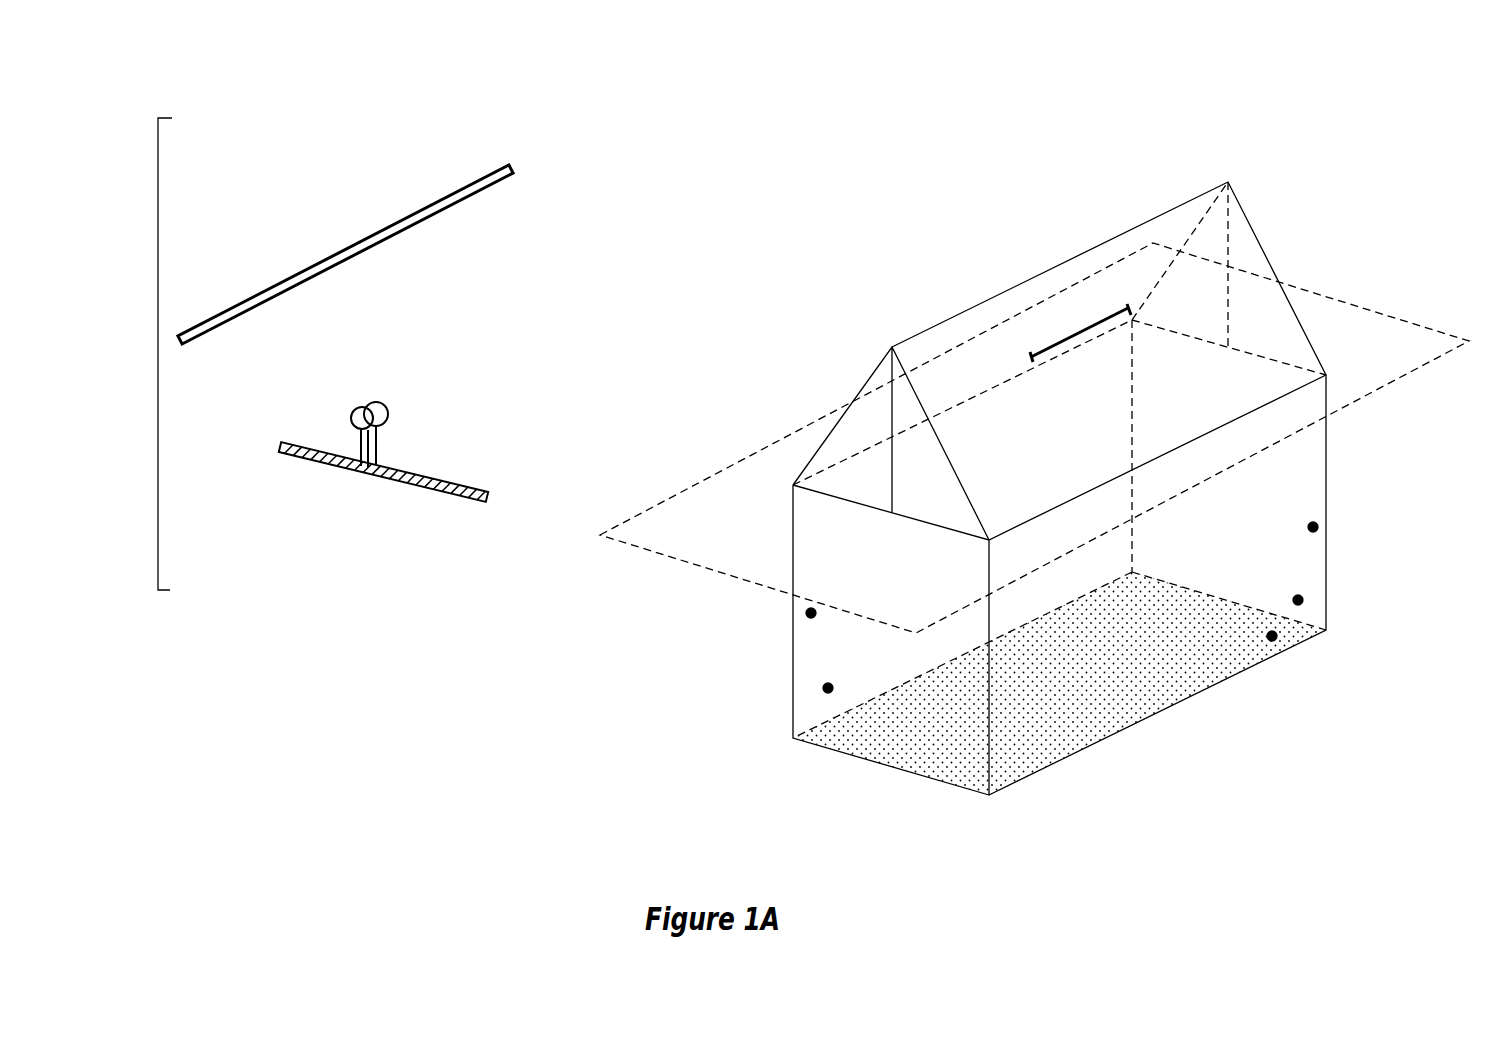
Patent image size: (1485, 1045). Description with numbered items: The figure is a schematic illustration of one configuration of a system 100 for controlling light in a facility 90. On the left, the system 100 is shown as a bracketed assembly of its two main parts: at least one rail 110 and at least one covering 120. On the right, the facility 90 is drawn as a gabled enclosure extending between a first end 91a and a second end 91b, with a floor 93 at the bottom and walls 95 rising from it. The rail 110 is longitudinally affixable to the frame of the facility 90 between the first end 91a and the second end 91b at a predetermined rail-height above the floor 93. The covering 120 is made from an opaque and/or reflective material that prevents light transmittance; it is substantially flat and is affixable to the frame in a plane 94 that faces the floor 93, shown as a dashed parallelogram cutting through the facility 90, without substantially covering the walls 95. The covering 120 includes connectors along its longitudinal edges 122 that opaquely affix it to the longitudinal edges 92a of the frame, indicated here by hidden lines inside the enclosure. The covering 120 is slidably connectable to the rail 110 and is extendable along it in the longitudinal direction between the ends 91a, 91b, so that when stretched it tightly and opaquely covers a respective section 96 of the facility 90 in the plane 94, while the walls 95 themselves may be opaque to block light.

The facility 90 is at (1354, 172).
The first end 91a is at (1276, 246).
The second end 91b is at (832, 478).
The longitudinal edges of frame 92a is at (998, 386).
The floor 93 is at (1272, 636).
The plane 94 is at (668, 506).
The walls 95 is at (828, 688).
The section 96 is at (1080, 333).
The system 100 is at (158, 354).
The rail 110 is at (330, 258).
The covering 120 is at (391, 471).
The longitudinal edges 122 is at (460, 508).